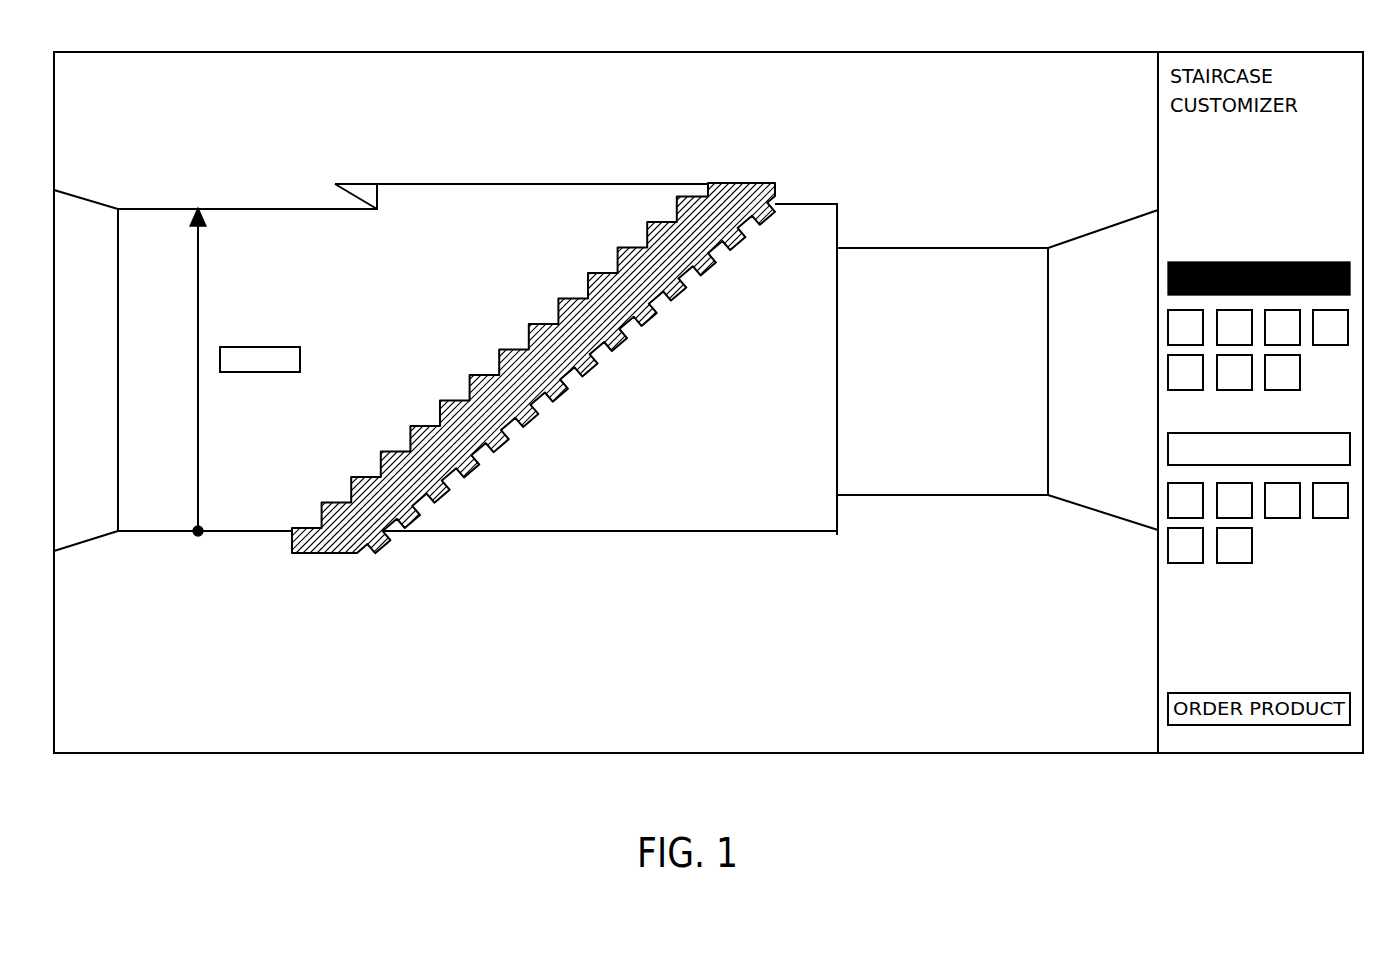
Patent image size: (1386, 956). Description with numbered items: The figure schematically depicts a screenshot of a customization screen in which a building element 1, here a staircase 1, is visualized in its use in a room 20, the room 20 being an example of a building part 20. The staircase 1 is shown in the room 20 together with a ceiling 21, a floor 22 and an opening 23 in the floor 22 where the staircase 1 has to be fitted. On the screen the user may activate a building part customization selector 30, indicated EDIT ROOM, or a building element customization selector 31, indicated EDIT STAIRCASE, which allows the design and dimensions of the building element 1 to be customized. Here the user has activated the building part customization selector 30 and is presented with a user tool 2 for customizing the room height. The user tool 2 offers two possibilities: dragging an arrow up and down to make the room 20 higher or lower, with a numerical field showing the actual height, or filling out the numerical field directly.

The building element 1 is at (593, 350).
The user tool 2 is at (199, 300).
The room 20 is at (790, 318).
The ceiling 21 is at (325, 72).
The floor 22 is at (110, 553).
The opening 23 is at (470, 200).
The building part customization selector 30 is at (1262, 262).
The building element customization selector 31 is at (1262, 432).